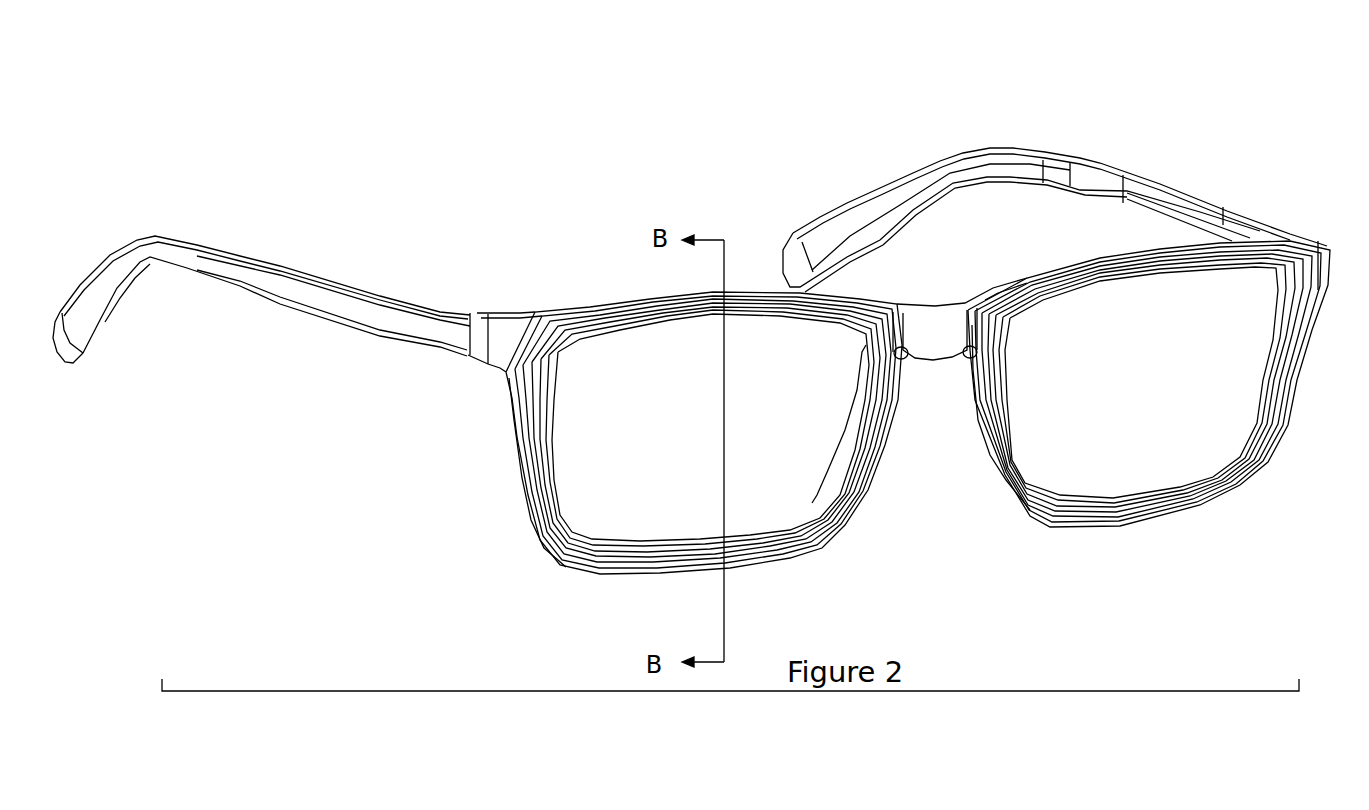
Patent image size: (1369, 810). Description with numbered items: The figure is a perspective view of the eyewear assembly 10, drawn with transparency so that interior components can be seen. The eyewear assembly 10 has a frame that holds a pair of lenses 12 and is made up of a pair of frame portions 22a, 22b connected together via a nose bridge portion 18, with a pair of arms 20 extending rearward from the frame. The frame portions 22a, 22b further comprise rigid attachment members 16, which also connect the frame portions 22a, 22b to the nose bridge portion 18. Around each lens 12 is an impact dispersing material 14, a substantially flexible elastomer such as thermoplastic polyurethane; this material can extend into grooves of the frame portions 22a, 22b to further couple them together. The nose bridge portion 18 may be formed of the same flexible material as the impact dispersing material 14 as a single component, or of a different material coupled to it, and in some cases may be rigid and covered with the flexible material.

The eyewear assembly 10 is at (730, 691).
The lenses 12 is at (580, 495).
The impact dispersing material 14 is at (537, 352).
The rigid attachment members 16 is at (935, 387).
The nose bridge portion 18 is at (932, 333).
The arms 20 is at (322, 300).
The frame portion 22a is at (533, 508).
The frame portion 22b is at (993, 453).